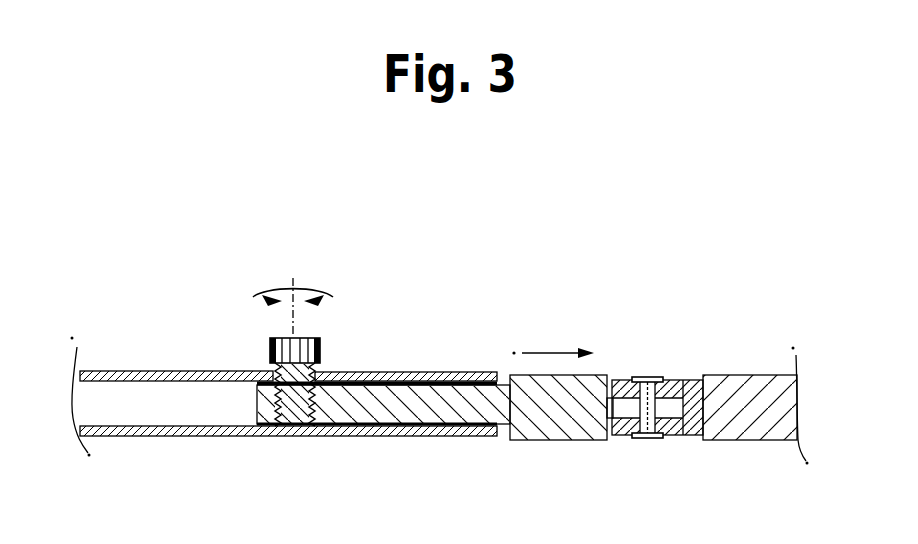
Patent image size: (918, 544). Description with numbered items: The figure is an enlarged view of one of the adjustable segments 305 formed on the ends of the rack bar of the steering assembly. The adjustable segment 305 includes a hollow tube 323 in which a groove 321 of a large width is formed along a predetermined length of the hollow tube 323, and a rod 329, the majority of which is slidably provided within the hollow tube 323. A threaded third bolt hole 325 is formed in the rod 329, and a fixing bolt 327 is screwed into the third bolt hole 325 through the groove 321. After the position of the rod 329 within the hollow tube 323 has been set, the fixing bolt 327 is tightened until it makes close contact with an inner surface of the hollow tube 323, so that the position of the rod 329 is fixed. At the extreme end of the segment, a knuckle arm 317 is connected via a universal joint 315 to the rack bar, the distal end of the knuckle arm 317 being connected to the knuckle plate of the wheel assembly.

The adjustable segment 305 is at (457, 226).
The universal joint 315 is at (655, 365).
The knuckle arm 317 is at (737, 377).
The groove 321 is at (382, 368).
The hollow tube 323 is at (148, 371).
The third bolt hole 325 is at (303, 437).
The fixing bolt 327 is at (268, 350).
The rod 329 is at (400, 418).